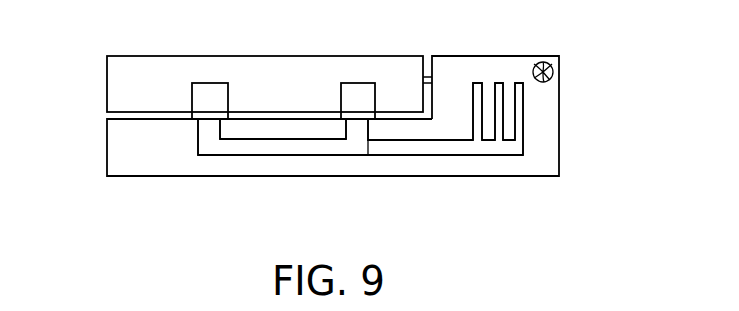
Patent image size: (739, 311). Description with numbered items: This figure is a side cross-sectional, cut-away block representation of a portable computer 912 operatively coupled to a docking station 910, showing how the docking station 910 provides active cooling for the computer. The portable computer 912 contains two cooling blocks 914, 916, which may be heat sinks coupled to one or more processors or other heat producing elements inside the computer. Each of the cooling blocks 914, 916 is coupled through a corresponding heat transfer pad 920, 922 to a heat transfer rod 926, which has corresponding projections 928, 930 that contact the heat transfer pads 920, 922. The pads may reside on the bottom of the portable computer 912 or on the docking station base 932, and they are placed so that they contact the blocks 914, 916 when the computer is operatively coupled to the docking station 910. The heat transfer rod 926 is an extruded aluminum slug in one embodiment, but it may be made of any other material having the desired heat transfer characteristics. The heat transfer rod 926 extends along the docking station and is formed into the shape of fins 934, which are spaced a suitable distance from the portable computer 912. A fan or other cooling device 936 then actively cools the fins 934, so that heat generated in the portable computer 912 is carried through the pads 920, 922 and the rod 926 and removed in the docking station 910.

The docking station 910 is at (488, 56).
The portable computer 912 is at (275, 55).
The cooling block 914 is at (213, 83).
The cooling block 916 is at (355, 83).
The heat transfer pad 920 is at (190, 116).
The heat transfer pad 922 is at (375, 117).
The heat transfer rod 926 is at (293, 156).
The projection 928 is at (199, 139).
The projection 930 is at (368, 130).
The docking station base 932 is at (107, 148).
The fins 934 is at (525, 112).
The fan or other cooling device 936 is at (548, 80).